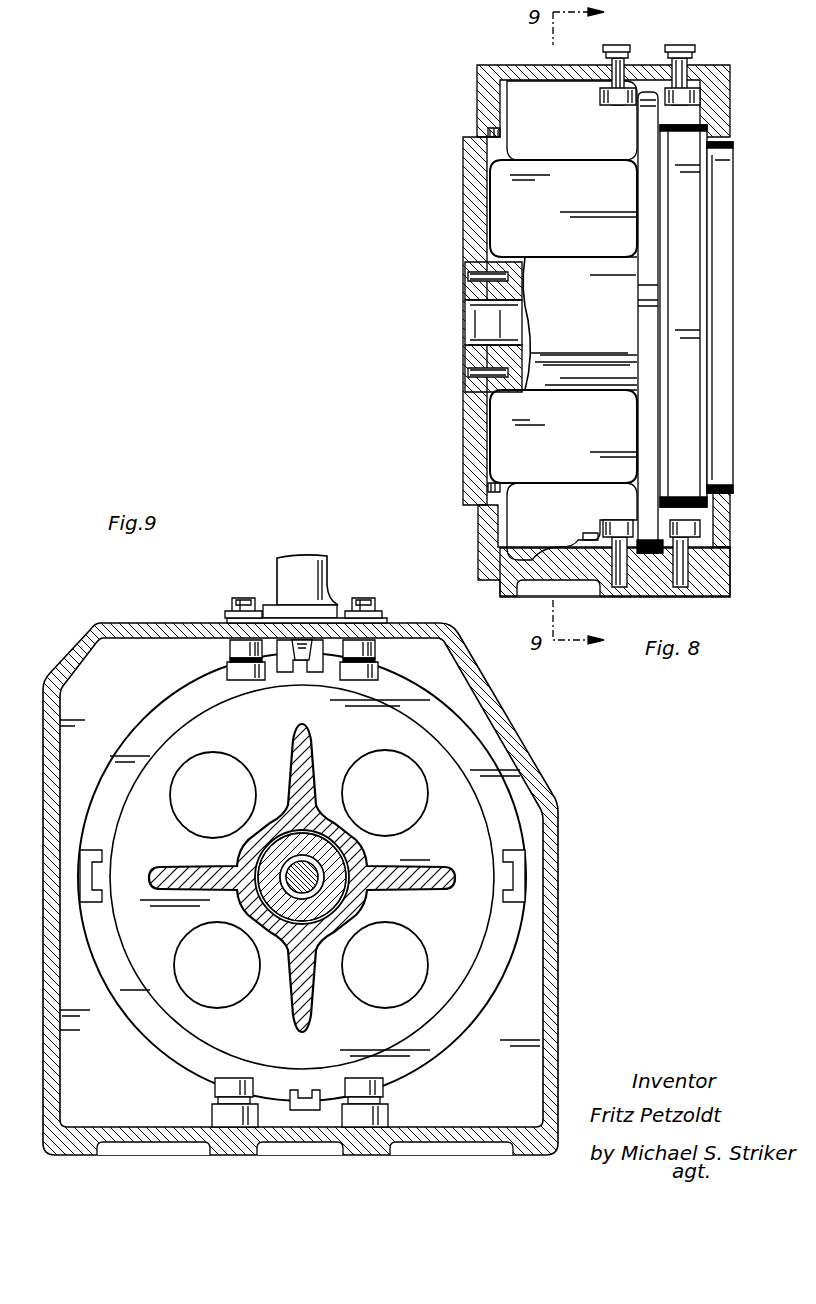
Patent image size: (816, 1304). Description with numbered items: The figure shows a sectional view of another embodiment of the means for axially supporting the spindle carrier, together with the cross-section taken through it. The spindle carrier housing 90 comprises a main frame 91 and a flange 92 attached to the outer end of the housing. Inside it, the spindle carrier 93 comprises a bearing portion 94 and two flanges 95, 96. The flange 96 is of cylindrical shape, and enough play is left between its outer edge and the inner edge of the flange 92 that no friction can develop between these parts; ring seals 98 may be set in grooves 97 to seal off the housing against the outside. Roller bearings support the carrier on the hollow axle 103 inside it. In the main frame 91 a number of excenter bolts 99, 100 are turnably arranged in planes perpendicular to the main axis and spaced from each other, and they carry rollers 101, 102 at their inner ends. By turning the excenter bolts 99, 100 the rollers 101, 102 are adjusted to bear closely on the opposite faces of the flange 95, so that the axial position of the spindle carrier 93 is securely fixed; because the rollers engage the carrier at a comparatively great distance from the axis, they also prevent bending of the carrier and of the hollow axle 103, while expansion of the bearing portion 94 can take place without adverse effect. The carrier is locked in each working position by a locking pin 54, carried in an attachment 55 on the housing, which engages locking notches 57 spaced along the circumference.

In FIG. 9, the locking pin 54 is at (288, 666).
In FIG. 9, the attachment 55 is at (328, 578).
In FIG. 9, the locking notches 57 is at (302, 662).
In FIG. 8, the spindle carrier housing 90 is at (518, 607).
In FIG. 9, the spindle carrier housing 90 is at (175, 1117).
In FIG. 8, the main frame 91 is at (651, 590).
In FIG. 9, the main frame 91 is at (441, 1128).
In FIG. 8, the flange 92 is at (507, 528).
In FIG. 8, the spindle carrier 93 is at (578, 255).
In FIG. 9, the spindle carrier 93 is at (228, 847).
In FIG. 8, the bearing portion 94 is at (582, 356).
In FIG. 9, the bearing portion 94 is at (330, 928).
In FIG. 8, the flange 95 is at (563, 282).
In FIG. 9, the flange 95 is at (127, 757).
In FIG. 8, the flange 96 is at (480, 205).
In FIG. 8, the grooves 97 is at (490, 132).
In FIG. 8, the ring seals 98 is at (492, 484).
In FIG. 8, the excenter bolts 99 is at (618, 48).
In FIG. 9, the excenter bolts 99 is at (231, 606).
In FIG. 8, the excenter bolts 100 is at (682, 48).
In FIG. 8, the rollers 101 is at (604, 106).
In FIG. 9, the rollers 101 is at (228, 668).
In FIG. 8, the rollers 102 is at (702, 96).
In FIG. 8, the hollow axle 103 is at (508, 265).
In FIG. 9, the hollow axle 103 is at (336, 862).